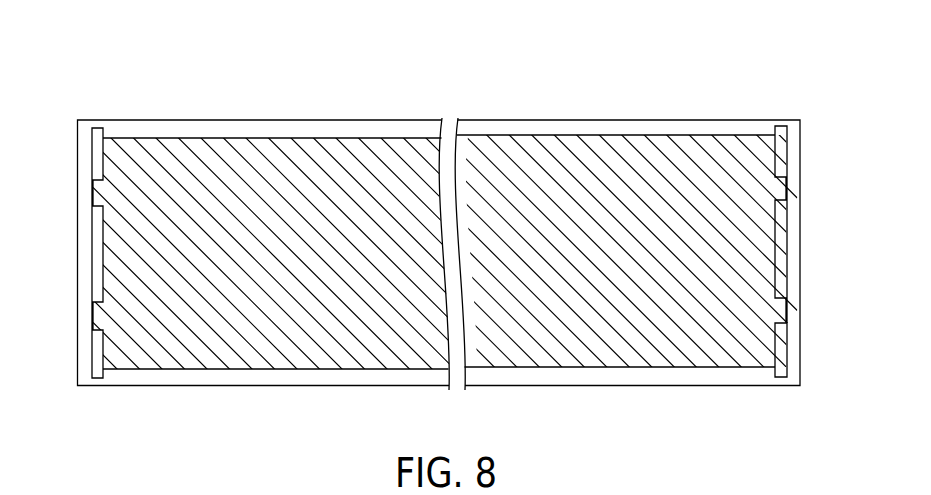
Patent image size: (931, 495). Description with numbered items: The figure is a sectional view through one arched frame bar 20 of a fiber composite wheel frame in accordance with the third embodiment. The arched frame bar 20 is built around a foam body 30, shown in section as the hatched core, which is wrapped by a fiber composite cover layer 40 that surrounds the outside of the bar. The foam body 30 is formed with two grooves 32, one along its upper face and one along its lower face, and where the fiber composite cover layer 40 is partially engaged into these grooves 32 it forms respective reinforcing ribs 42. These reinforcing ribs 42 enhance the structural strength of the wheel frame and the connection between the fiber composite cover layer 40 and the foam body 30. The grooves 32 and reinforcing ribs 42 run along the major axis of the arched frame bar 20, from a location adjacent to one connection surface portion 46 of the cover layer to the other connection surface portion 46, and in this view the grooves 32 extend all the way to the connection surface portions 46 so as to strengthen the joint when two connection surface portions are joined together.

The arched frame bar 20 is at (686, 66).
The foam body 30 is at (392, 233).
The groove 32 is at (198, 153).
The fiber composite cover layer 40 is at (325, 110).
The reinforcing rib 42 is at (630, 134).
The connection surface portion 46 is at (84, 146).